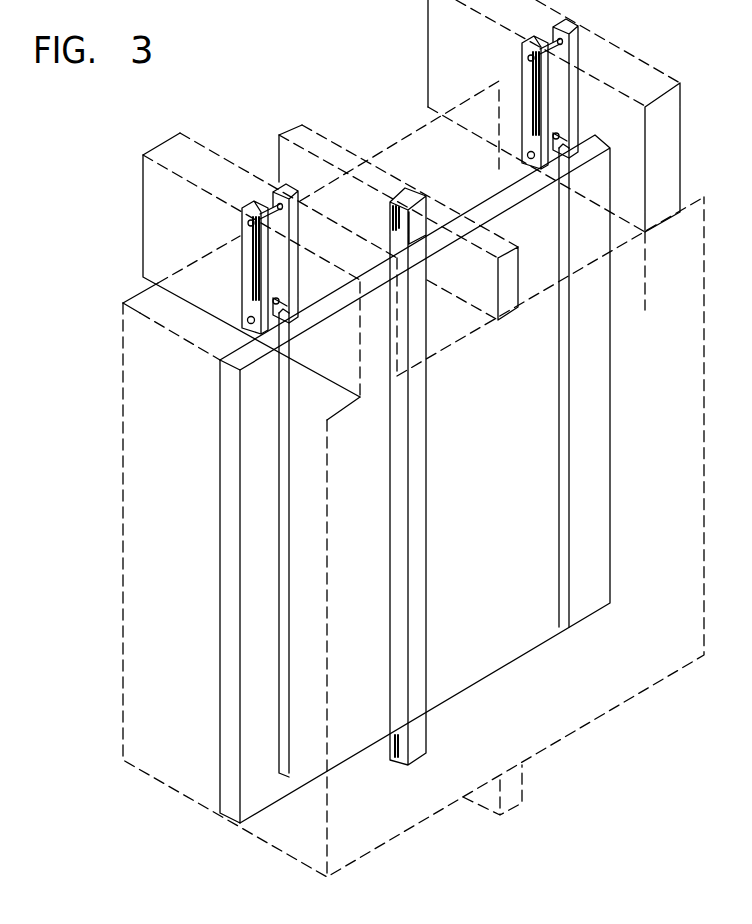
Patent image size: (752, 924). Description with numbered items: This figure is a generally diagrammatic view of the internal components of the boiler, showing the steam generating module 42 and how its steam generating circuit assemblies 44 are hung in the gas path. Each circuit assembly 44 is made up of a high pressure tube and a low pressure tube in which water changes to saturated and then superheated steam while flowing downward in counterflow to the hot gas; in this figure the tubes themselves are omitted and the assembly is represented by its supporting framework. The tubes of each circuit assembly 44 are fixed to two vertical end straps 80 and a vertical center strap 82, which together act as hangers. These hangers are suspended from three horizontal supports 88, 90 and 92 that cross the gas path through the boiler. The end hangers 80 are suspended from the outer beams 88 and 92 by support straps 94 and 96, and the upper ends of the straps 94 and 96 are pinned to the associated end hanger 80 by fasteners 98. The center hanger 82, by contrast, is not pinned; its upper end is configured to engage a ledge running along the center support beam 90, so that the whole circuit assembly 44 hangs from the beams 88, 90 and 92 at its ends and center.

The steam generating module 42 is at (146, 448).
The steam generating circuit assembly 44 is at (214, 553).
The vertical end strap 80 is at (569, 490).
The vertical center strap 82 is at (416, 407).
The horizontal support 88 is at (141, 200).
The center support beam 90 is at (306, 132).
The horizontal support 92 is at (444, 26).
The support strap 94 is at (522, 110).
The support strap 96 is at (568, 60).
The fastener 98 is at (574, 146).